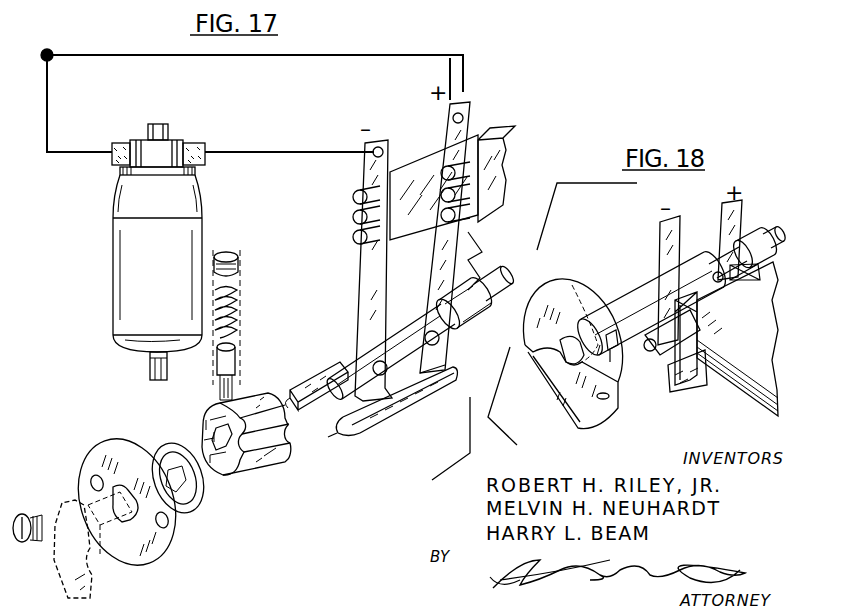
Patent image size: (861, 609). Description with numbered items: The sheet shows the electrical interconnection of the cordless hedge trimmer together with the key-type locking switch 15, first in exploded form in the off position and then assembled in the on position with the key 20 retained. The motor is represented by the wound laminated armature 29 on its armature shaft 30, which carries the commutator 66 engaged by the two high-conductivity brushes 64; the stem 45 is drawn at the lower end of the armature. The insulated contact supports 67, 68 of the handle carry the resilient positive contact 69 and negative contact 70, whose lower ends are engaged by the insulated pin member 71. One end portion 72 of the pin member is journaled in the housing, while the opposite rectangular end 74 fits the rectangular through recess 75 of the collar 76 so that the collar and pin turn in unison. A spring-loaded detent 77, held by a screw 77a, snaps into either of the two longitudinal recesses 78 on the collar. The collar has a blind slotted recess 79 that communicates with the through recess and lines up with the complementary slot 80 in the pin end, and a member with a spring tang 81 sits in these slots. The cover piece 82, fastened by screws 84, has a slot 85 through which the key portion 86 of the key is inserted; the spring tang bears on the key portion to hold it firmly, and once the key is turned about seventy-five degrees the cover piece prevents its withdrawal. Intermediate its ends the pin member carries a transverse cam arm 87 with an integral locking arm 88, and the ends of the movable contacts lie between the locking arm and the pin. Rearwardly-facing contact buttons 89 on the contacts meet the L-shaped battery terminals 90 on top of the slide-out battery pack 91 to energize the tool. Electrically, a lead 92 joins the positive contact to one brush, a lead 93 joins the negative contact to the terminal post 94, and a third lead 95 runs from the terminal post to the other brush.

In FIG. 17, the locking switch 15 is at (318, 482).
In FIG. 18, the locking switch 15 is at (616, 246).
In FIG. 17, the key 20 is at (72, 572).
In FIG. 18, the key 20 is at (562, 378).
In FIG. 17, the armature 29 is at (128, 252).
In FIG. 17, the armature shaft 30 is at (162, 130).
In FIG. 17, the battery stem 45 is at (148, 383).
In FIG. 17, the electrical brush 64 is at (118, 143).
In FIG. 17, the commutator 66 is at (146, 146).
In FIG. 17, the contact support 67 is at (506, 170).
In FIG. 17, the contact support 68 is at (418, 158).
In FIG. 17, the positive contact 69 is at (440, 270).
In FIG. 18, the positive contact 69 is at (724, 236).
In FIG. 17, the negative contact 70 is at (368, 284).
In FIG. 18, the negative contact 70 is at (662, 252).
In FIG. 17, the pin member 71 is at (346, 345).
In FIG. 18, the pin member 71 is at (648, 290).
In FIG. 17, the end portion 72 is at (490, 280).
In FIG. 18, the end portion 72 is at (782, 230).
In FIG. 17, the end 74 is at (322, 372).
In FIG. 17, the through recess 75 is at (205, 440).
In FIG. 17, the collar 76 is at (212, 432).
In FIG. 18, the collar 76 is at (602, 308).
In FIG. 17, the spring-loaded detent 77 is at (238, 355).
In FIG. 17, the screw 77a is at (240, 262).
In FIG. 17, the longitudinal recesses 78 is at (232, 412).
In FIG. 17, the blind slotted recess 79 is at (228, 470).
In FIG. 17, the slot 80 is at (290, 392).
In FIG. 18, the slot 80 is at (618, 344).
In FIG. 17, the spring tang 81 is at (186, 492).
In FIG. 17, the cover piece 82 is at (100, 452).
In FIG. 18, the cover piece 82 is at (578, 412).
In FIG. 17, the screws 84 is at (28, 512).
In FIG. 17, the slot 85 is at (138, 535).
In FIG. 18, the slot 85 is at (545, 340).
In FIG. 17, the key portion 86 is at (112, 542).
In FIG. 18, the key portion 86 is at (572, 298).
In FIG. 17, the transverse cam arm 87 is at (400, 385).
In FIG. 17, the locking arm 88 is at (358, 434).
In FIG. 18, the locking arm 88 is at (672, 372).
In FIG. 17, the contact buttons 89 is at (440, 343).
In FIG. 18, the contact buttons 89 is at (656, 350).
In FIG. 18, the battery terminals 90 is at (698, 322).
In FIG. 18, the battery pack 91 is at (748, 380).
In FIG. 17, the lead 92 is at (290, 150).
In FIG. 17, the lead 93 is at (290, 60).
In FIG. 17, the terminal post 94 is at (45, 55).
In FIG. 17, the lead 95 is at (46, 110).